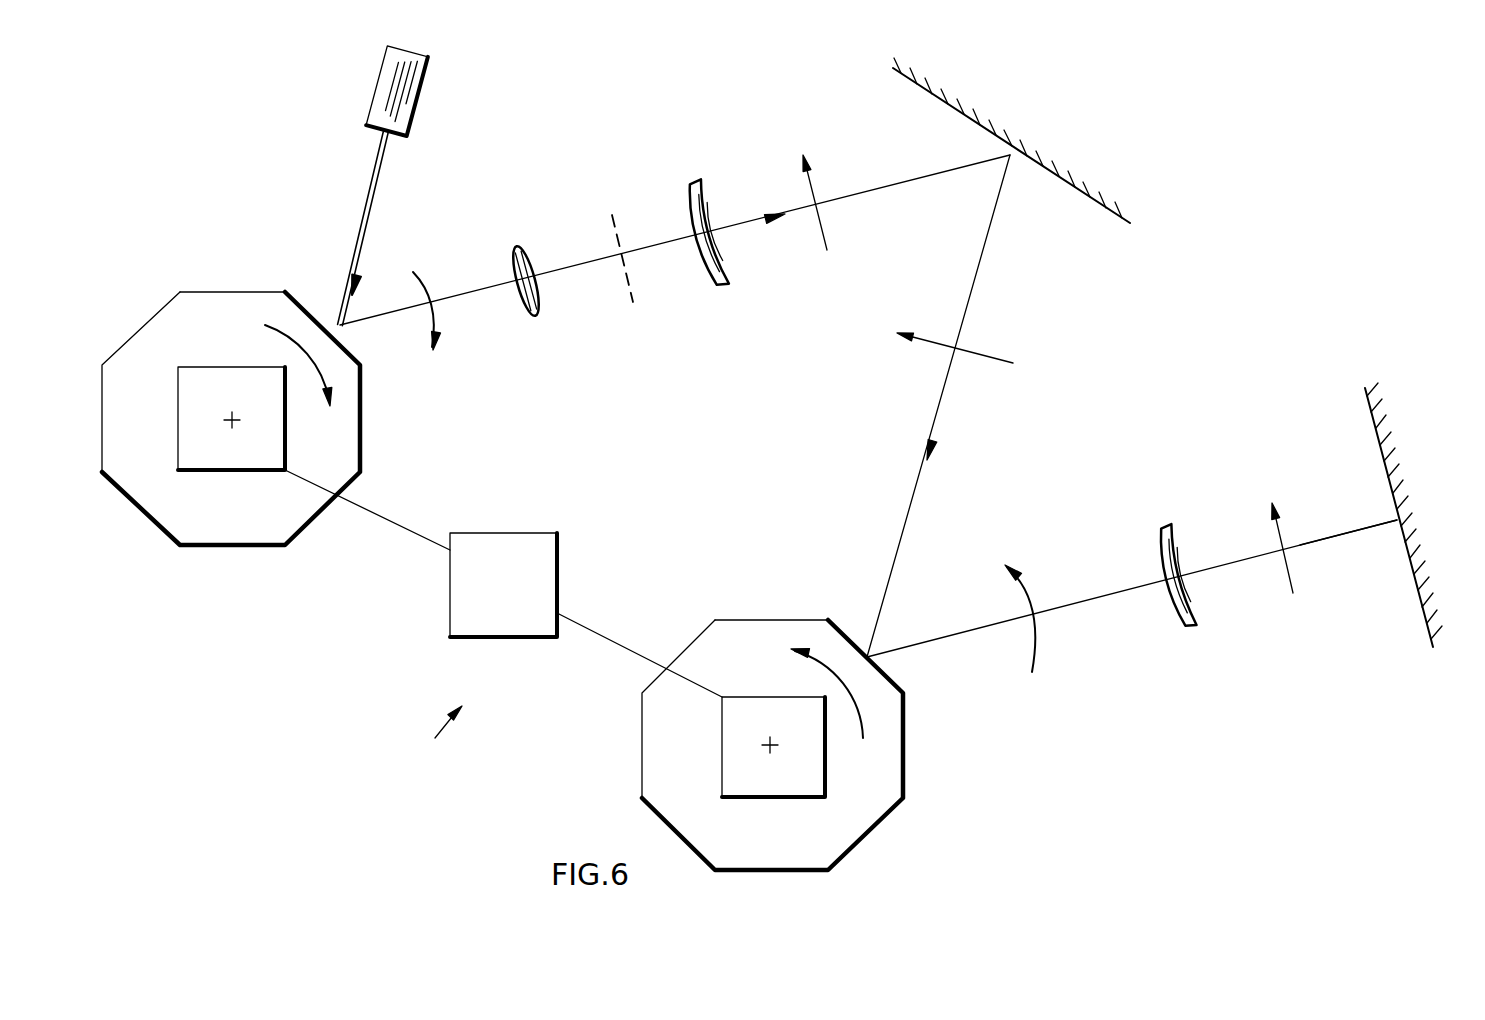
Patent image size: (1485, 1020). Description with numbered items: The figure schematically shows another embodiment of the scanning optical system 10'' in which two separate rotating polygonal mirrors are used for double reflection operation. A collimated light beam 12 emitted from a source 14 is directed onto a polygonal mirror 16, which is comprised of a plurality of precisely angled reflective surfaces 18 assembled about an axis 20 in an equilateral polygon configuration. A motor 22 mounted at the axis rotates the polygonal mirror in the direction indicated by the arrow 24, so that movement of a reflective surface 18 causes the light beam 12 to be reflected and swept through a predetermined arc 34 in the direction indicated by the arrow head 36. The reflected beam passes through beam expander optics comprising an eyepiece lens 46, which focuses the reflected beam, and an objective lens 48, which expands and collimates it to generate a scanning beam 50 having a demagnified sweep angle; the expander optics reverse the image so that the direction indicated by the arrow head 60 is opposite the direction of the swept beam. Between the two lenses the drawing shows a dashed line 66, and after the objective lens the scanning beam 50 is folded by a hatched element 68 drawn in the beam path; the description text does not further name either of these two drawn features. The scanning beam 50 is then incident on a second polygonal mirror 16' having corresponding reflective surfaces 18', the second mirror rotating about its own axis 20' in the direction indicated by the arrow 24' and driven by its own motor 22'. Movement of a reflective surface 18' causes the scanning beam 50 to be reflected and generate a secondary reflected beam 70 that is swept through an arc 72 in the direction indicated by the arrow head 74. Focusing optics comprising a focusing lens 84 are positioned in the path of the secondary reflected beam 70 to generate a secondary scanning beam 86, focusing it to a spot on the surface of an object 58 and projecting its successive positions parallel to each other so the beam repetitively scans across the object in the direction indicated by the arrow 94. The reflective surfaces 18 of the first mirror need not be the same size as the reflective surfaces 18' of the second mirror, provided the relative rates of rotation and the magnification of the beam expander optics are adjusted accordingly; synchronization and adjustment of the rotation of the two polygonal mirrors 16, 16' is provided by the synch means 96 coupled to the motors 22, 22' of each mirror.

The scanning optical system 10'' is at (408, 758).
The collimated light beam 12 is at (386, 200).
The source 14 is at (378, 90).
The polygonal mirror 16 is at (231, 458).
The reflective surface 18 is at (232, 258).
The axis 20 is at (211, 440).
The motor 22 is at (231, 450).
The arrow 24 is at (263, 365).
The arc 34 is at (415, 275).
The arrow head 36 is at (437, 345).
The eyepiece lens 46 is at (530, 247).
The objective lens 48 is at (722, 180).
The scanning beam 50 is at (855, 195).
The object 58 is at (1418, 615).
The arrow head 60 is at (830, 233).
The focal plane 66 is at (630, 280).
The first mirror 68 is at (1097, 205).
The secondary reflected beam 70 is at (966, 654).
The arc 72 is at (1040, 655).
The arrow head 74 is at (1010, 563).
The focusing lens 84 is at (1200, 610).
The secondary scanning beam 86 is at (1325, 550).
The arrow 94 is at (1280, 505).
The synch means 96 is at (558, 562).
The second polygonal mirror 16' is at (790, 752).
The reflective surface 18' is at (771, 587).
The second rotation axis 20' is at (792, 765).
The motor 22' is at (738, 747).
The second rotation direction arrow 24' is at (845, 722).